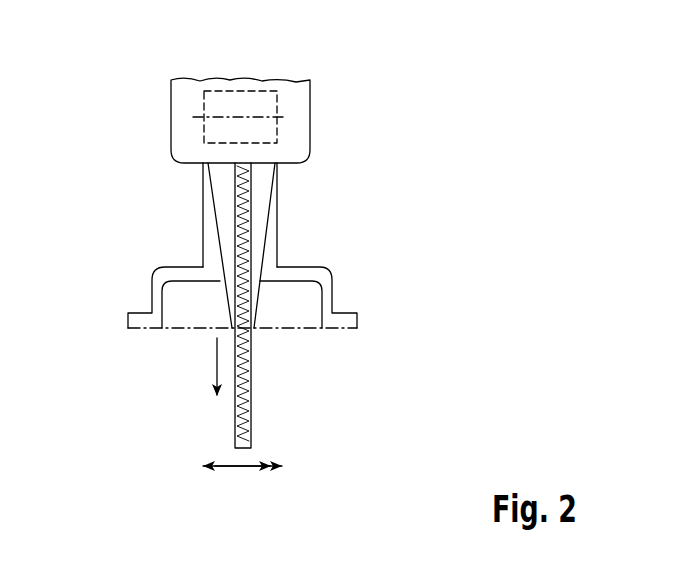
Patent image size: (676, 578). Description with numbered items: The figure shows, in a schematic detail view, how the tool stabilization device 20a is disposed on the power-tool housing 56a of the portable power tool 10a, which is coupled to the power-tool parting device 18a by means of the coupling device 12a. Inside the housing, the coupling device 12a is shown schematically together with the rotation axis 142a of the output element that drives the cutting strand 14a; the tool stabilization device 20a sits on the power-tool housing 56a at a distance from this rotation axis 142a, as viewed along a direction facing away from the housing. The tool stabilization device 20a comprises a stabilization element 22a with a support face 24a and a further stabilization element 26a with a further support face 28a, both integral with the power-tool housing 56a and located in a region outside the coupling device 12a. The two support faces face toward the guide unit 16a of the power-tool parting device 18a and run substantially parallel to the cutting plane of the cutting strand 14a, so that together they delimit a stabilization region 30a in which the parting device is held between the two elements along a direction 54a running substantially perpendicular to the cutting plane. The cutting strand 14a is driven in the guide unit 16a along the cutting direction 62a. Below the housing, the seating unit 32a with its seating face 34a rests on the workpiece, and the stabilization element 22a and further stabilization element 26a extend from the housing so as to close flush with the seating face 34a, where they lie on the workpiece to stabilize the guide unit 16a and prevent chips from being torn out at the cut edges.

The portable power tool 10a is at (412, 80).
The coupling device 12a is at (247, 91).
The cutting strand 14a is at (252, 415).
The guide unit 16a is at (235, 415).
The power-tool parting device 18a is at (195, 443).
The tool stabilization device 20a is at (143, 160).
The stabilization element 22a is at (258, 237).
The support face 24a is at (236, 199).
The further stabilization element 26a is at (226, 236).
The further support face 28a is at (245, 173).
The stabilization region 30a is at (260, 342).
The seating unit 32a is at (378, 283).
The seating face 34a is at (343, 331).
The direction 54a is at (240, 467).
The power-tool housing 56a is at (182, 96).
The cutting direction 62a is at (214, 352).
The rotation axis 142a is at (283, 120).